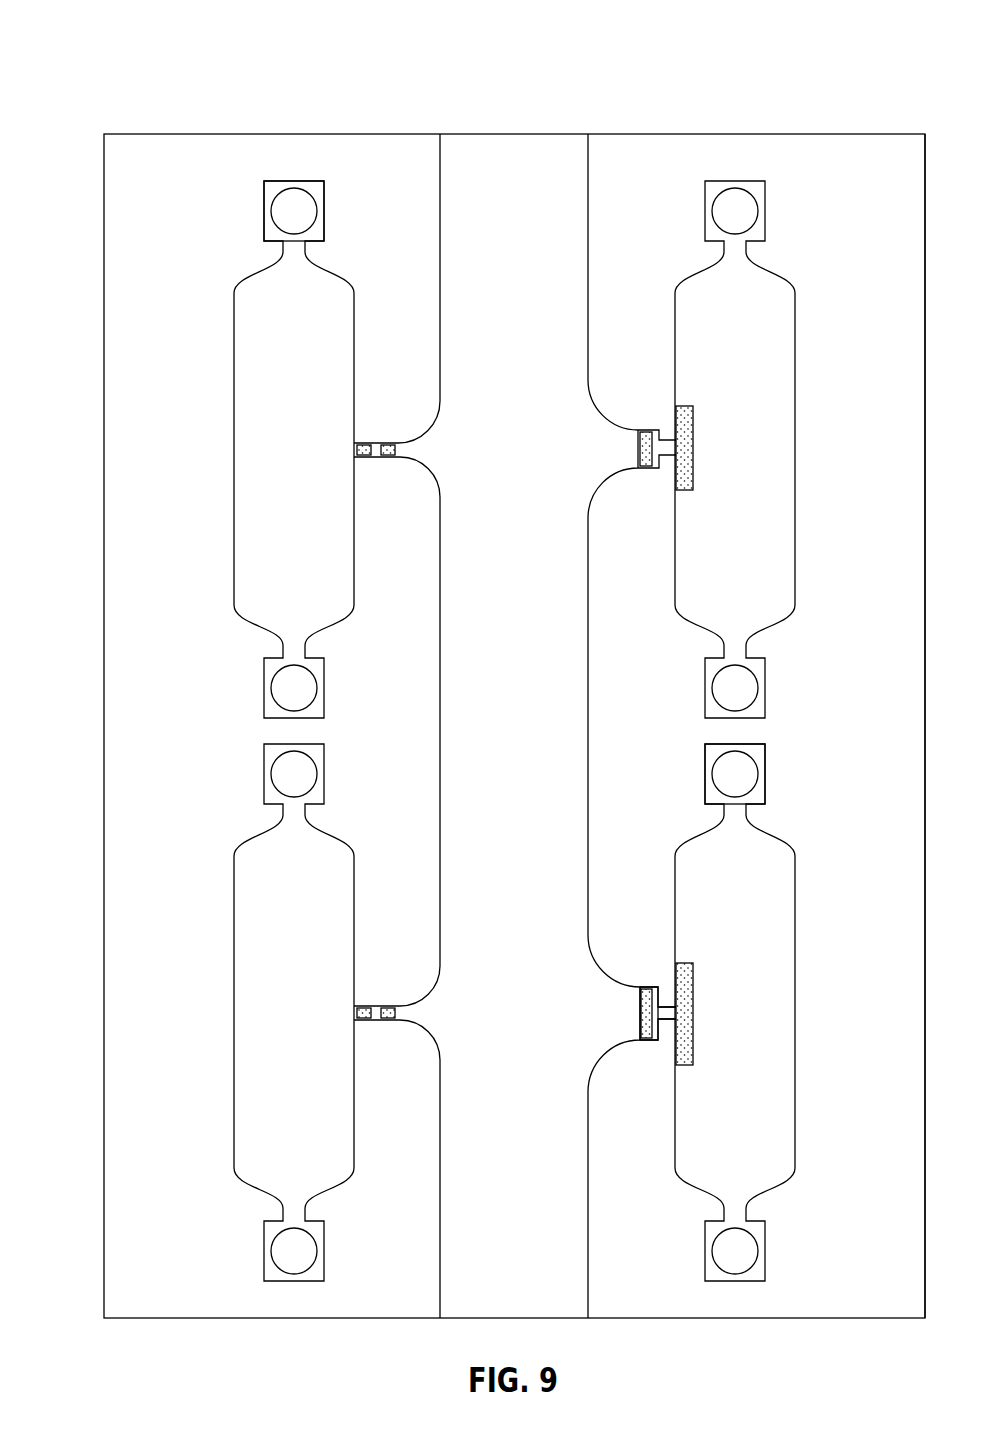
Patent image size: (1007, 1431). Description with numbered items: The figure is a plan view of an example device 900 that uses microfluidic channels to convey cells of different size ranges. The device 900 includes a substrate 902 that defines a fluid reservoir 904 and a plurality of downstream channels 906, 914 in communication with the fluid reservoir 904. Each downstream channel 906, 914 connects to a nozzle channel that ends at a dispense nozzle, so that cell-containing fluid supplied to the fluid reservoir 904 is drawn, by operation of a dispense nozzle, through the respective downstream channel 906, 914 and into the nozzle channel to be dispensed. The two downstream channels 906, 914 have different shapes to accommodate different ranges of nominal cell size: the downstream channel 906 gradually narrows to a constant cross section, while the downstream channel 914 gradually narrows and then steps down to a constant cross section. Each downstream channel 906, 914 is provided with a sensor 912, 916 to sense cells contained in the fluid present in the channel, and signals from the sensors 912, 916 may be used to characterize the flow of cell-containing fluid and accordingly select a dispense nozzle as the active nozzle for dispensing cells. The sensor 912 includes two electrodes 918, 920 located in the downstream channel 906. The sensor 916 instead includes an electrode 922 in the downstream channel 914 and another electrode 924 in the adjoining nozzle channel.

The device 900 is at (126, 98).
The substrate 902 is at (831, 162).
The fluid reservoir 904 is at (578, 181).
The downstream channel 906 is at (408, 440).
The sensor 912 is at (380, 461).
The downstream channel 914 is at (646, 978).
The sensor 916 is at (664, 1057).
The electrode 918 is at (364, 443).
The electrode 920 is at (387, 459).
The electrode 922 is at (645, 1022).
The electrode 924 is at (686, 1040).